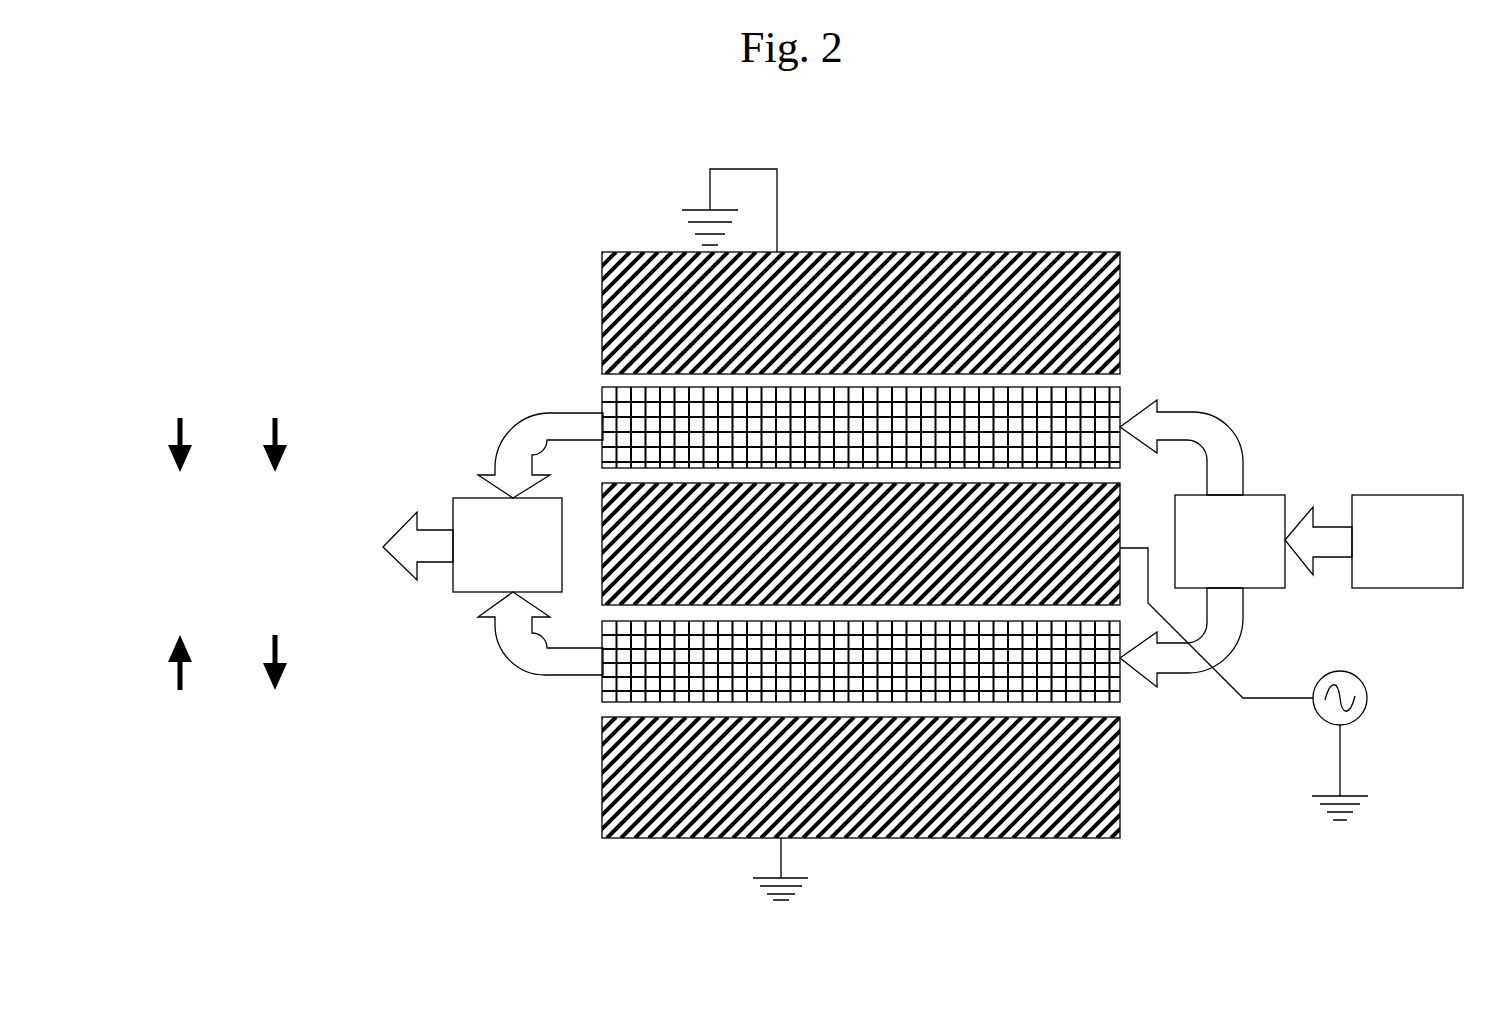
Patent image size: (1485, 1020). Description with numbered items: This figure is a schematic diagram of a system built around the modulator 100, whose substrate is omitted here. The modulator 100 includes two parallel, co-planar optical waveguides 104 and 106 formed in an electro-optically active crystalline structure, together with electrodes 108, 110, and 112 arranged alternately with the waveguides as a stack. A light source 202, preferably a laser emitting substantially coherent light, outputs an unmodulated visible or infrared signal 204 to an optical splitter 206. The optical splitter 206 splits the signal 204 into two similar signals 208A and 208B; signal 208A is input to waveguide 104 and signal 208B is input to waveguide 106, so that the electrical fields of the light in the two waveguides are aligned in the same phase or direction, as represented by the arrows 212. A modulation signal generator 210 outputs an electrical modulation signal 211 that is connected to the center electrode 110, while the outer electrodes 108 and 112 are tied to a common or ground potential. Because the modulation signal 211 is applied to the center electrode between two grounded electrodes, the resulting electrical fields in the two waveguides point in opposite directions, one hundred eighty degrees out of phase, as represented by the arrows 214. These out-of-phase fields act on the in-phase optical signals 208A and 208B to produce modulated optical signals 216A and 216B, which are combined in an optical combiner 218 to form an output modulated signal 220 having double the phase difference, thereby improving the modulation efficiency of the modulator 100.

The modulator 100 is at (486, 224).
The optical waveguide 104 is at (603, 400).
The optical waveguide 106 is at (610, 687).
The electrode 108 is at (938, 250).
The center electrode 110 is at (1120, 493).
The electrode 112 is at (888, 838).
The light source 202 is at (1407, 541).
The signal 204 is at (1320, 527).
The optical splitter 206 is at (1230, 541).
The signal 208A is at (1238, 421).
The signal 208B is at (1243, 623).
The modulation signal generator 210 is at (1317, 713).
The electrical modulation signal 211 is at (1277, 698).
The arrows 212 is at (288, 400).
The arrows 214 is at (193, 400).
The modulated optical signal 216A is at (495, 448).
The modulated optical signal 216B is at (498, 652).
The optical combiner 218 is at (507, 545).
The output modulated signal 220 is at (405, 527).